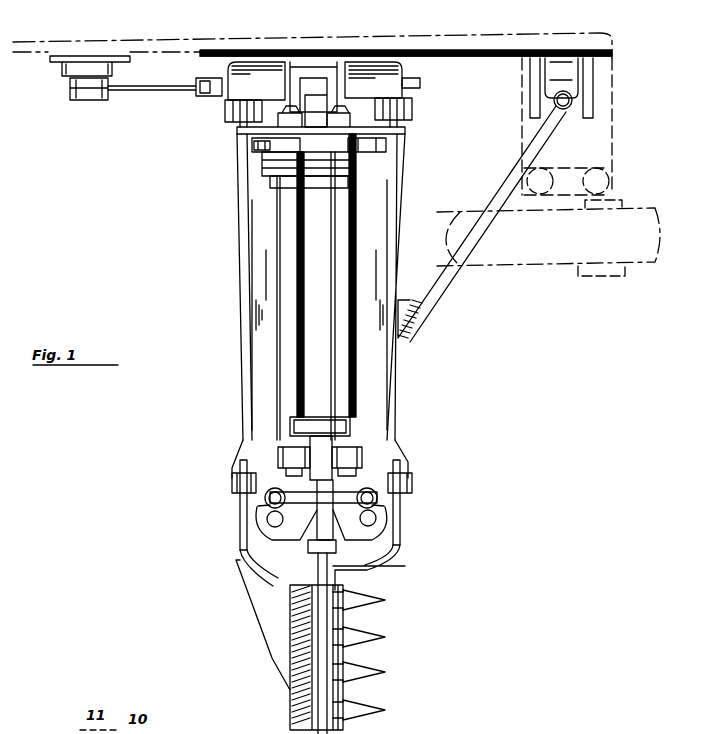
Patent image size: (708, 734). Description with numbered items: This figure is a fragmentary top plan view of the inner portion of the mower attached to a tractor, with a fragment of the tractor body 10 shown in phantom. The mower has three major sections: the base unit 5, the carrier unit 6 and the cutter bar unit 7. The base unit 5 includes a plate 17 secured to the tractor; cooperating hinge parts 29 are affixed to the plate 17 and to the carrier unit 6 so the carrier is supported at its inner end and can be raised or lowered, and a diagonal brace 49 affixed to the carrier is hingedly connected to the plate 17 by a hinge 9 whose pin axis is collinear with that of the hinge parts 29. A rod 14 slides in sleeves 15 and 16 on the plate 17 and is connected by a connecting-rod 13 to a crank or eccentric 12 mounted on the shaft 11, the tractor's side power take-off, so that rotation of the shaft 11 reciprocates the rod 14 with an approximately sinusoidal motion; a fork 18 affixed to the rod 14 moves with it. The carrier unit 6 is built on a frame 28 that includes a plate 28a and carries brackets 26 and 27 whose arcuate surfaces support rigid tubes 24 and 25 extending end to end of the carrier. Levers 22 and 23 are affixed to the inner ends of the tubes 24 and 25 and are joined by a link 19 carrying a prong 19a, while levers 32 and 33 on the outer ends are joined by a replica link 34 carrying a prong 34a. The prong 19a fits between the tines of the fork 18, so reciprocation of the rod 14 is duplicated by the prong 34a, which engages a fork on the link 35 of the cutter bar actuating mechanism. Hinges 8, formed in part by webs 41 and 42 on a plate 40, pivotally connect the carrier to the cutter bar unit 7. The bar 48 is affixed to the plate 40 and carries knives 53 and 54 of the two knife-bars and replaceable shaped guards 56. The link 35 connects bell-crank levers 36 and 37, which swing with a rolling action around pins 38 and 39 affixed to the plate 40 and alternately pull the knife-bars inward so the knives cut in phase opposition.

The base unit 5 is at (496, 63).
The carrier unit 6 is at (234, 276).
The cutter bar unit 7 is at (262, 665).
The hinges 8 is at (232, 480).
The hinge 9 is at (590, 97).
The tractor body 10 is at (470, 22).
The shaft 11 is at (84, 98).
The crank or eccentric 12 is at (72, 88).
The connecting-rod 13 is at (128, 90).
The rod 14 is at (420, 83).
The sleeve 15 is at (272, 70).
The sleeve 16 is at (388, 72).
The plate 17 is at (484, 52).
The fork 18 is at (322, 80).
The link 19 is at (242, 140).
The prong 19a is at (256, 144).
The lever 22 is at (268, 165).
The lever 23 is at (383, 150).
The rigid tube 24 is at (292, 238).
The rigid tube 25 is at (342, 221).
The bracket 26 is at (278, 185).
The bracket 27 is at (312, 417).
The frame 28 is at (264, 340).
The plate 28a is at (400, 131).
The hinge parts 29 is at (228, 110).
The lever 32 is at (292, 450).
The lever 33 is at (358, 448).
The link 34 is at (336, 462).
The prong 34a is at (340, 484).
The link 35 is at (366, 490).
The bell-crank lever 36 is at (266, 516).
The bell-crank lever 37 is at (392, 508).
The pin 38 is at (262, 522).
The pin 39 is at (378, 522).
The plate 40 is at (250, 578).
The web 41 is at (250, 543).
The web 42 is at (395, 547).
The bar 48 is at (306, 716).
The diagonal brace 49 is at (426, 298).
The knives 53 is at (356, 700).
The knives 54 is at (352, 658).
The shaped guards 56 is at (355, 630).